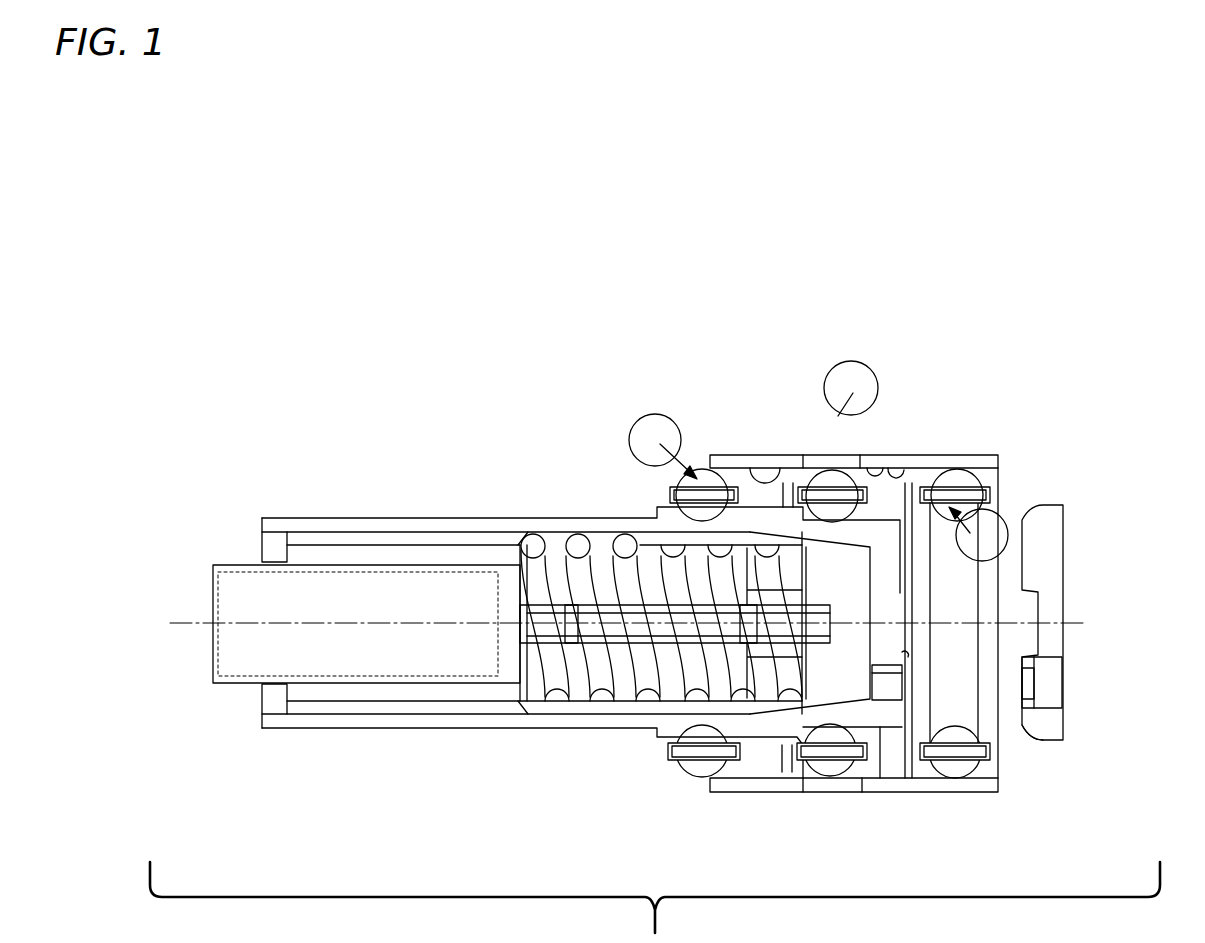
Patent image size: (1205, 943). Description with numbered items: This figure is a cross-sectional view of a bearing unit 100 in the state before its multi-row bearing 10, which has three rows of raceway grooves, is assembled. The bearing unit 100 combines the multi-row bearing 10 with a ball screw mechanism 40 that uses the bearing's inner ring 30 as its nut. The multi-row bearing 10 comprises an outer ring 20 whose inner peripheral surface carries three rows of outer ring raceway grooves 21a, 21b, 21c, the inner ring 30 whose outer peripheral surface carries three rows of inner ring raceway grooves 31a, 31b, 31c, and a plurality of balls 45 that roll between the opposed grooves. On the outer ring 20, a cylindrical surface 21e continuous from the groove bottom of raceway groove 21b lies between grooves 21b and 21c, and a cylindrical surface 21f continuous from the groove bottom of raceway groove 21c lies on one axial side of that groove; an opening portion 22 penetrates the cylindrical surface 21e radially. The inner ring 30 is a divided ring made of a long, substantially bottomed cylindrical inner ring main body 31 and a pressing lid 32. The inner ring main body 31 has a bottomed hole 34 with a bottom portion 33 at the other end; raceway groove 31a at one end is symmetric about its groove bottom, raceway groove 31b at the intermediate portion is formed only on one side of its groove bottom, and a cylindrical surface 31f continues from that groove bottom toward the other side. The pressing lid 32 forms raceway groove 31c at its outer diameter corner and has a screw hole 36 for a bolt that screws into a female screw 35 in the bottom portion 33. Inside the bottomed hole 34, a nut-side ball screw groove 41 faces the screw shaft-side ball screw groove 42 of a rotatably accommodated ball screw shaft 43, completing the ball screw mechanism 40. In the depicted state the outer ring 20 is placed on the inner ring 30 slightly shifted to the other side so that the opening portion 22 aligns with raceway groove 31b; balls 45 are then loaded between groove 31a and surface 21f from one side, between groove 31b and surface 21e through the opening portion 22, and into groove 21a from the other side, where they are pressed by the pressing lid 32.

The bearing unit 100 is at (831, 196).
The multi-row bearing 10 is at (986, 328).
The outer ring 20 is at (1002, 463).
The outer ring raceway groove 21a is at (950, 486).
The outer ring raceway groove 21b is at (899, 485).
The outer ring raceway groove 21c is at (750, 468).
The cylindrical surface 21e is at (884, 476).
The cylindrical surface 21f is at (707, 486).
The opening portion 22 is at (833, 453).
The inner ring 30 is at (1136, 537).
The inner ring main body 31 is at (912, 601).
The inner ring raceway groove 31a is at (704, 776).
The inner ring raceway groove 31b is at (842, 770).
The inner ring raceway groove 31c is at (1036, 738).
The cylindrical surface 31f is at (882, 727).
The pressing lid 32 is at (1052, 552).
The bottom portion 33 is at (880, 568).
The bottomed hole 34 is at (395, 545).
The female screw 35 is at (880, 680).
The screw hole 36 is at (1050, 668).
The ball screw mechanism 40 is at (598, 754).
The ball screw groove 41 is at (523, 563).
The ball screw groove 42 is at (555, 692).
The ball screw shaft 43 is at (640, 665).
The balls 45 is at (638, 430).